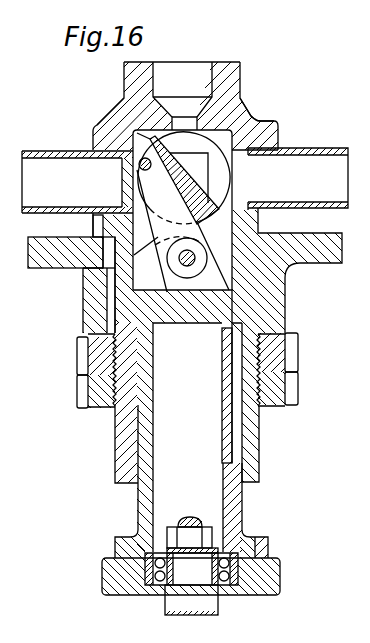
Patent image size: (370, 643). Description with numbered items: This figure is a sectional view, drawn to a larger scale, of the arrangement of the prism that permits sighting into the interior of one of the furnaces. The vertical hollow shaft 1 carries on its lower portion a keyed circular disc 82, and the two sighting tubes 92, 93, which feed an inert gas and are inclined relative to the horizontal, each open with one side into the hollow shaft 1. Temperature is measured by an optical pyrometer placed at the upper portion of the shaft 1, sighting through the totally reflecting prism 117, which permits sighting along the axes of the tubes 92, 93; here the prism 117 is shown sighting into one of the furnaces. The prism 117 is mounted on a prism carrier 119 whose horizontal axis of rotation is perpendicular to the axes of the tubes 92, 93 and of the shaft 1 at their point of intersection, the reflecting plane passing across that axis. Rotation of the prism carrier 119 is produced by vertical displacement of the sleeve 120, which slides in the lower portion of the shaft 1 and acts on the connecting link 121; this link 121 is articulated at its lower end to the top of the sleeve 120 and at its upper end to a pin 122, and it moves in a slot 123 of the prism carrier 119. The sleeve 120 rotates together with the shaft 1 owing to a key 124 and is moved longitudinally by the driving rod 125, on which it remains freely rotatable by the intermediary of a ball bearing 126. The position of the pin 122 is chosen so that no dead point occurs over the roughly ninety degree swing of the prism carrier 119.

The vertical hollow shaft 1 is at (125, 71).
The prism carrier 119 is at (120, 115).
The totally reflecting prism 117 is at (246, 113).
The sighting tube 92 is at (62, 143).
The sighting tube 93 is at (316, 143).
The pin 122 is at (143, 169).
The slot 123 is at (95, 224).
The circular disc 82 is at (74, 269).
The connecting link 121 is at (112, 272).
The key 124 is at (236, 433).
The sleeve 120 is at (236, 499).
The ball bearing 126 is at (158, 584).
The driving rod 125 is at (218, 607).